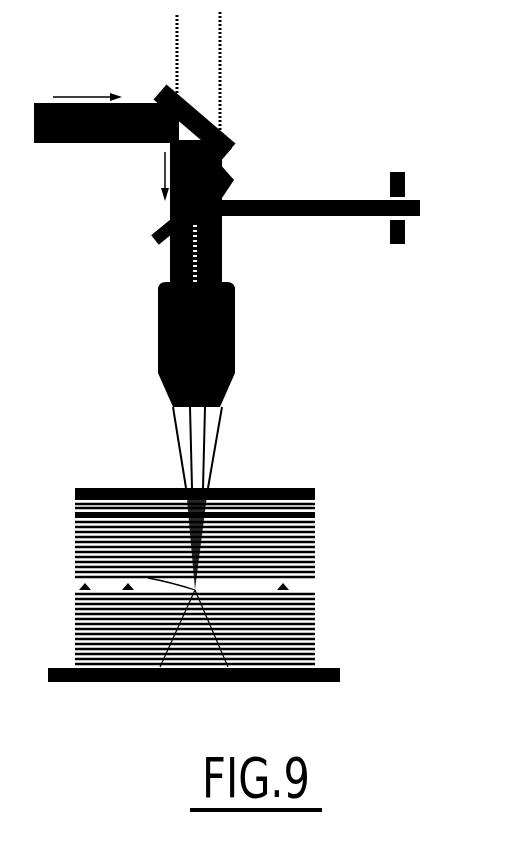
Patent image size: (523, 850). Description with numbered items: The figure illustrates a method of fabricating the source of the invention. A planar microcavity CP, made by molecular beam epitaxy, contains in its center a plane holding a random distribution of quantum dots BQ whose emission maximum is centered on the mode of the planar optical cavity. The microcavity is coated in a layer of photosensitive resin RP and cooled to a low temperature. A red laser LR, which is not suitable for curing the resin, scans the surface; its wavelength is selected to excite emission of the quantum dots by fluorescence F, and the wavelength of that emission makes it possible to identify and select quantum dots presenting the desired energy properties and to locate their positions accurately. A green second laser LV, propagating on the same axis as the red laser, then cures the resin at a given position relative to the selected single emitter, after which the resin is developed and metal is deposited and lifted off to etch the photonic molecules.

The red laser LR is at (75, 103).
The fluorescence F is at (222, 62).
The green second laser LV is at (317, 200).
The quantum dots BQ is at (130, 488).
The photosensitive resin RP is at (258, 488).
The planar microcavity CP is at (332, 501).